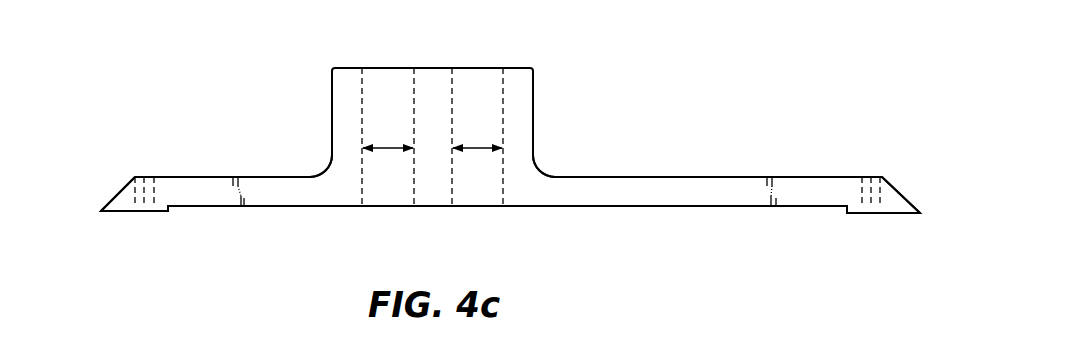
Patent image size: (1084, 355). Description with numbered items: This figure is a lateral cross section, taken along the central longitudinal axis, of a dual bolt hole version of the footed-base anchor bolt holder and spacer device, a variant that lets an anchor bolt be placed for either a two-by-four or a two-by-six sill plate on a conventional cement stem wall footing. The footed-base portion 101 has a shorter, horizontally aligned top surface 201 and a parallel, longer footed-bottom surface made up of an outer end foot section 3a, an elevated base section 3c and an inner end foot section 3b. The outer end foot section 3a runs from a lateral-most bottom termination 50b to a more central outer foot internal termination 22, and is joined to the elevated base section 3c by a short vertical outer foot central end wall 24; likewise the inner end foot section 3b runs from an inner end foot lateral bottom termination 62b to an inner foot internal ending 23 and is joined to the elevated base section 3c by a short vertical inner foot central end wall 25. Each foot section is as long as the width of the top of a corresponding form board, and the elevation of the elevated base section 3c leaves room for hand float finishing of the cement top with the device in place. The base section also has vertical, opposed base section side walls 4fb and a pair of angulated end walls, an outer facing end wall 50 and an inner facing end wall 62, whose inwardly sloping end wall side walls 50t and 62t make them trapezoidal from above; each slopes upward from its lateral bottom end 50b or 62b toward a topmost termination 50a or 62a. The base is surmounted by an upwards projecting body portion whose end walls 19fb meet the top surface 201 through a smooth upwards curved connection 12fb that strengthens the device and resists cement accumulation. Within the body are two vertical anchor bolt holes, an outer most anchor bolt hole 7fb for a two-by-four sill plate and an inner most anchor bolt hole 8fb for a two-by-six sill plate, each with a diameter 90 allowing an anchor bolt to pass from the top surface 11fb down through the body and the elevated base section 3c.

The footed-base portion 101 is at (205, 144).
The top surface 11fb is at (432, 64).
The end walls 19fb is at (330, 102).
The smooth upwards curved connection 12fb is at (325, 171).
The outer most anchor bolt hole 7fb is at (403, 116).
The inner most anchor bolt hole 8fb is at (493, 116).
The diameter 90 is at (388, 150).
The top surface 201 is at (661, 176).
The base section side walls 4fb is at (572, 185).
The outer facing end wall 50 is at (121, 186).
The top most termination 50a is at (134, 176).
The lateral-most bottom termination 50b is at (101, 214).
The end wall side walls 50t is at (130, 212).
The outer foot internal termination 22 is at (177, 213).
The outer foot central end wall 24 is at (183, 207).
The outer end foot section 3a is at (165, 268).
The elevated base section 3c is at (493, 216).
The inner foot central end wall 25 is at (832, 209).
The inner foot internal ending 23 is at (842, 214).
The end wall side walls 62t is at (885, 212).
The inner end foot lateral bottom termination 62b is at (921, 215).
The inner end foot section 3b is at (848, 268).
The top most termination 62a is at (886, 174).
The inner facing end wall 62 is at (898, 182).